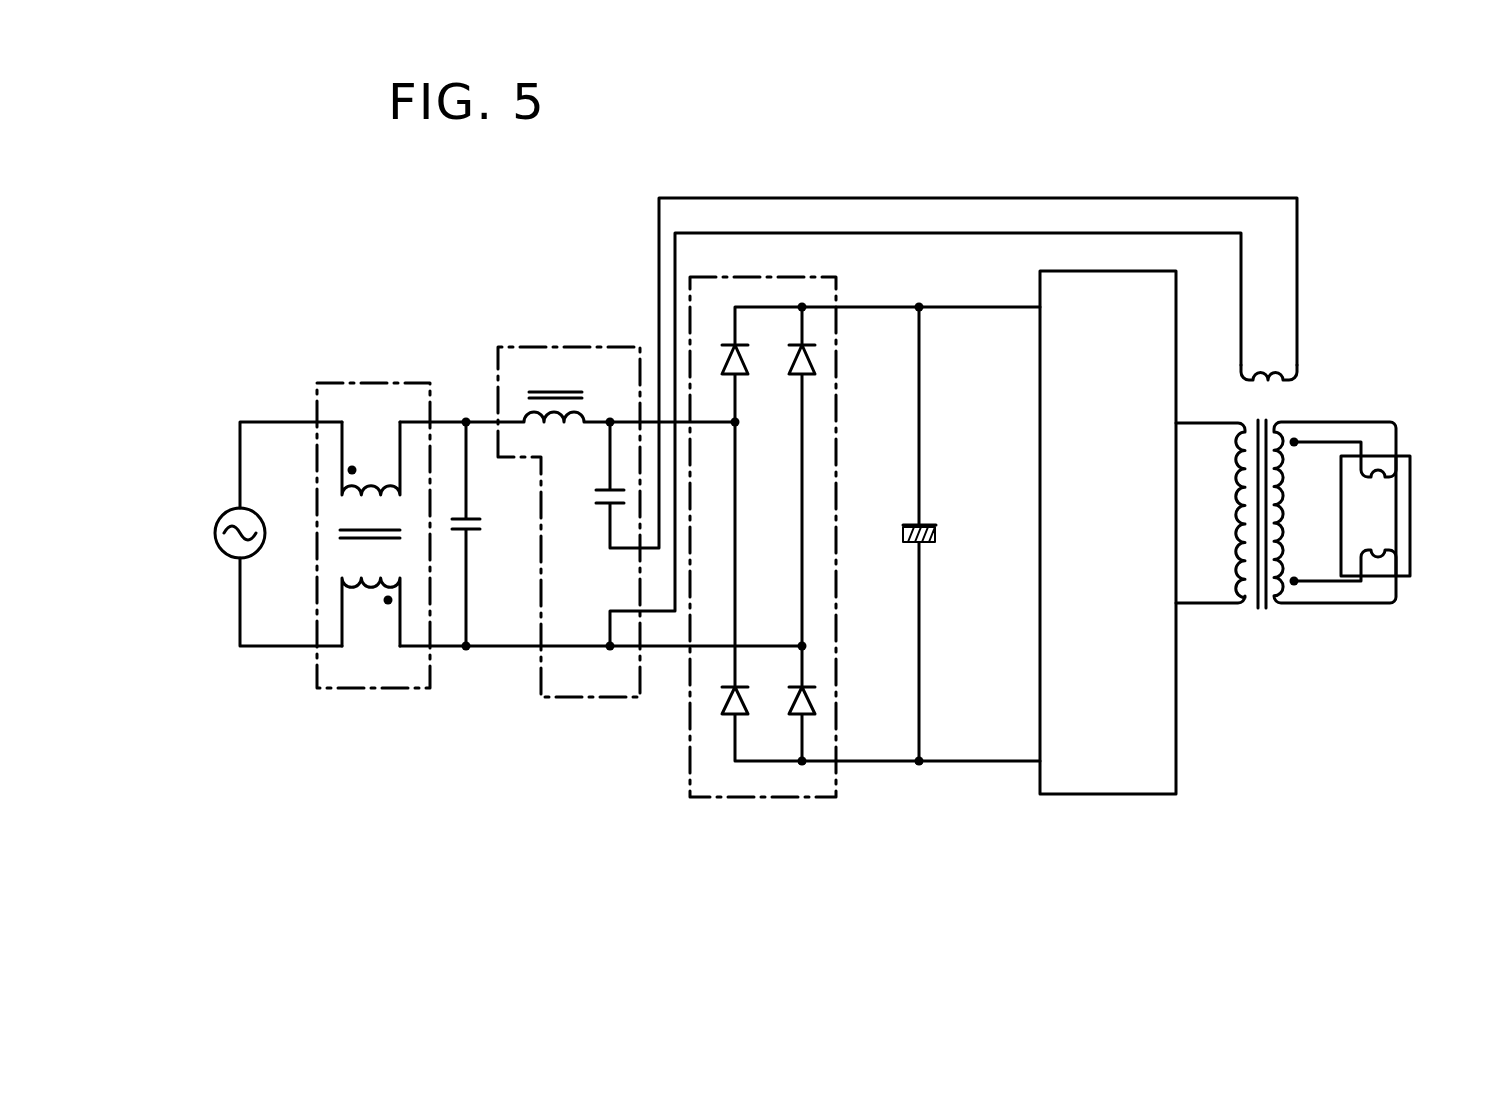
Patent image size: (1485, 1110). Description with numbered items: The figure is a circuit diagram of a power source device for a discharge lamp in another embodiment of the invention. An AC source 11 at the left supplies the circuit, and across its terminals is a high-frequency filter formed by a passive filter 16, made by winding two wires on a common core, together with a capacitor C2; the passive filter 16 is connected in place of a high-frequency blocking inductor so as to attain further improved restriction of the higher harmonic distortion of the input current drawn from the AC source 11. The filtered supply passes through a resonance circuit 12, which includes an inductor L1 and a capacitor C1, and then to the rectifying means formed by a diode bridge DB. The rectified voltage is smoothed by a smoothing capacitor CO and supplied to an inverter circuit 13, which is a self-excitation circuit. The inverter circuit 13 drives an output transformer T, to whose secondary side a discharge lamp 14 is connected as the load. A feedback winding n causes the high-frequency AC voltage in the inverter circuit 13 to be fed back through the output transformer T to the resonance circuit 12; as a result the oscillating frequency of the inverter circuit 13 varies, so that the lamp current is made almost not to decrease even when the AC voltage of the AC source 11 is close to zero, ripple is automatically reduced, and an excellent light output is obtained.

The AC source 11 is at (222, 556).
The resonance circuit 12 is at (881, 447).
The inverter circuit 13 is at (1177, 752).
The discharge lamp 14 is at (1410, 488).
The passive filter 16 is at (388, 690).
The capacitor C1 is at (553, 313).
The capacitor C2 is at (492, 534).
The inductor L1 is at (600, 389).
The smoothing capacitor CO is at (950, 534).
The diode bridge DB is at (755, 797).
The output transformer T is at (1286, 488).
The feedback winding n is at (1269, 352).